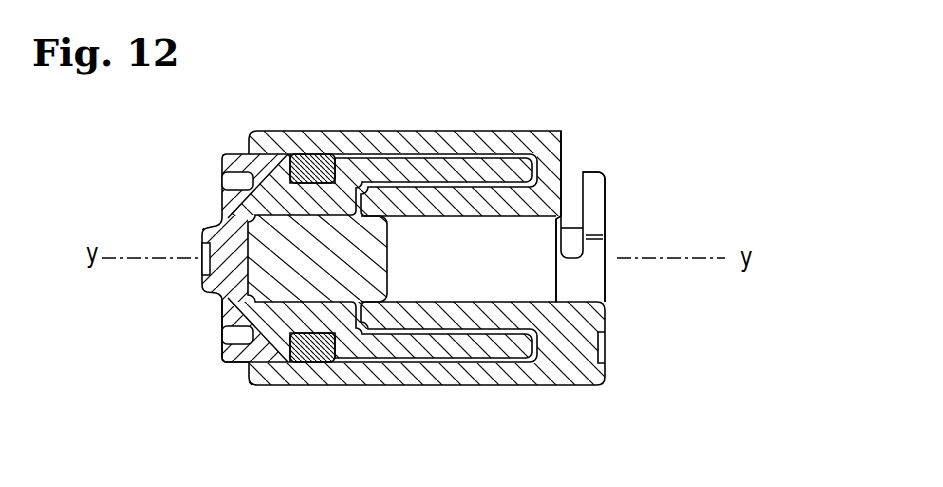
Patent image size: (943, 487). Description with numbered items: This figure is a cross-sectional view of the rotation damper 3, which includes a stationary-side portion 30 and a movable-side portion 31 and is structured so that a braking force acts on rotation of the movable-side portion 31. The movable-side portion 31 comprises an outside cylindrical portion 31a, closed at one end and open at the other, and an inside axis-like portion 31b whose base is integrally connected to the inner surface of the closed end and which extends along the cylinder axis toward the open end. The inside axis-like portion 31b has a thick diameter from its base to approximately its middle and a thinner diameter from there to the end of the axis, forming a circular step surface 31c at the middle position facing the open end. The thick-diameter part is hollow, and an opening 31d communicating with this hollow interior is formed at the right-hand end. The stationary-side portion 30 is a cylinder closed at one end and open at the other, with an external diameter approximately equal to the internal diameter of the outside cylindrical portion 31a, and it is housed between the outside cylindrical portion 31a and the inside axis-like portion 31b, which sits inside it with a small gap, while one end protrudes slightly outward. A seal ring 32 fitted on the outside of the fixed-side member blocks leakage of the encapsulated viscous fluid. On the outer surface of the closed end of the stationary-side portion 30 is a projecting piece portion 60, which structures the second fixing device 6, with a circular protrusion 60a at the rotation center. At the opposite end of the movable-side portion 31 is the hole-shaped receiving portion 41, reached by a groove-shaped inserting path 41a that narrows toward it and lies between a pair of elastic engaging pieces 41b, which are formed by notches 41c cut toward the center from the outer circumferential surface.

The rotation damper 3 is at (441, 131).
The second fixing device 6 is at (196, 237).
The projecting piece portion 60 is at (218, 220).
The circular protrusion 60a is at (197, 280).
The stationary-side portion 30 is at (222, 358).
The movable-side portion 31 is at (416, 263).
The outside cylindrical portion 31a is at (396, 170).
The inside axis-like portion 31b is at (338, 335).
The circular step surface 31c is at (395, 335).
The opening 31d is at (554, 266).
The seal ring 32 is at (305, 365).
The receiving portion 41 is at (630, 215).
The inserting path 41a is at (601, 190).
The elastic engaging pieces 41b is at (596, 176).
The notches 41c is at (575, 198).